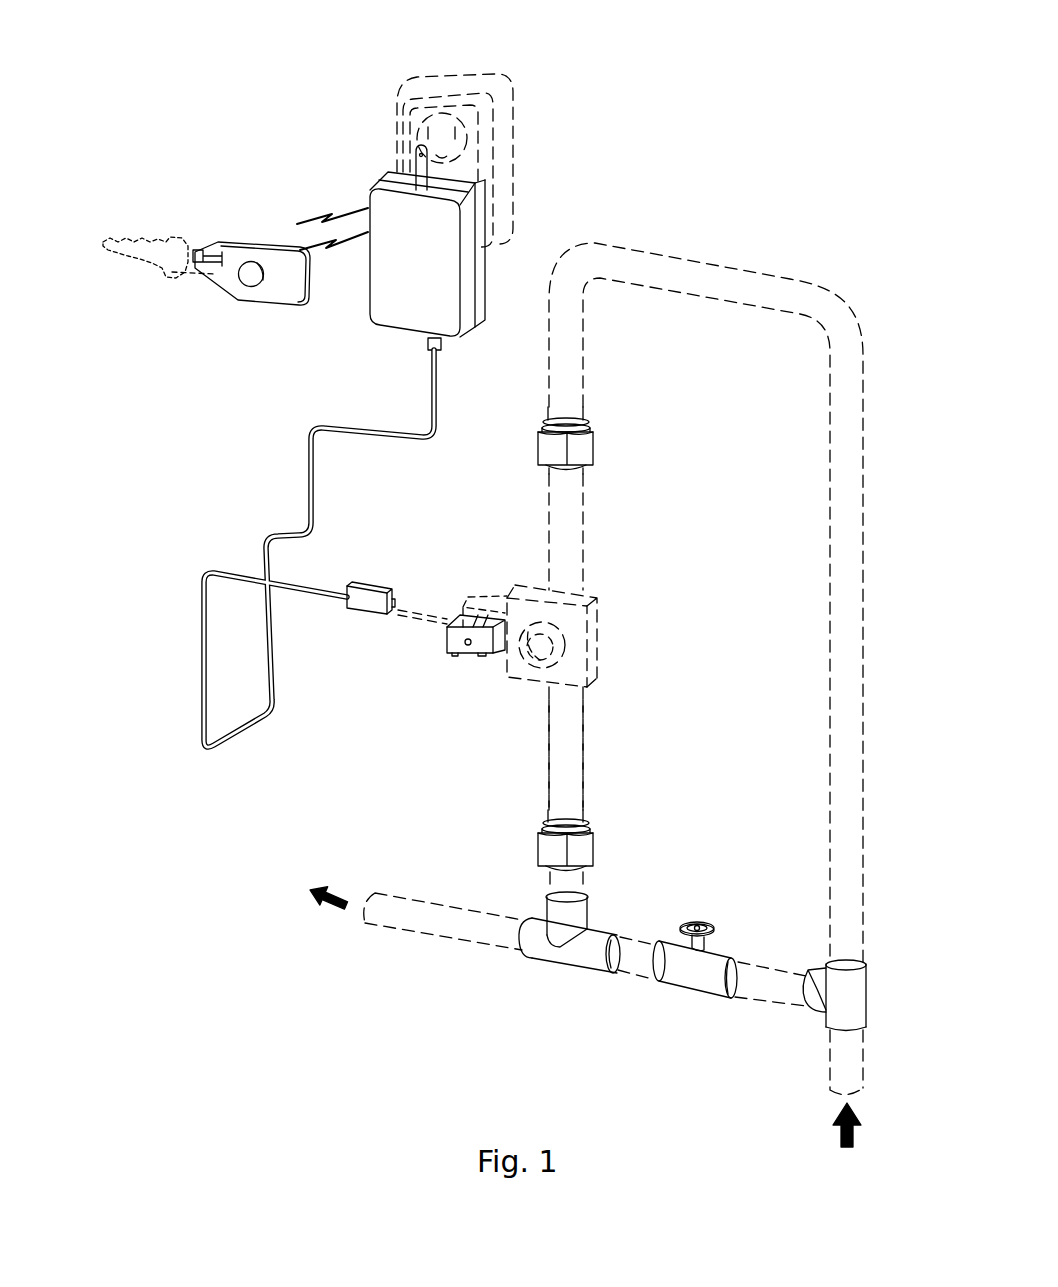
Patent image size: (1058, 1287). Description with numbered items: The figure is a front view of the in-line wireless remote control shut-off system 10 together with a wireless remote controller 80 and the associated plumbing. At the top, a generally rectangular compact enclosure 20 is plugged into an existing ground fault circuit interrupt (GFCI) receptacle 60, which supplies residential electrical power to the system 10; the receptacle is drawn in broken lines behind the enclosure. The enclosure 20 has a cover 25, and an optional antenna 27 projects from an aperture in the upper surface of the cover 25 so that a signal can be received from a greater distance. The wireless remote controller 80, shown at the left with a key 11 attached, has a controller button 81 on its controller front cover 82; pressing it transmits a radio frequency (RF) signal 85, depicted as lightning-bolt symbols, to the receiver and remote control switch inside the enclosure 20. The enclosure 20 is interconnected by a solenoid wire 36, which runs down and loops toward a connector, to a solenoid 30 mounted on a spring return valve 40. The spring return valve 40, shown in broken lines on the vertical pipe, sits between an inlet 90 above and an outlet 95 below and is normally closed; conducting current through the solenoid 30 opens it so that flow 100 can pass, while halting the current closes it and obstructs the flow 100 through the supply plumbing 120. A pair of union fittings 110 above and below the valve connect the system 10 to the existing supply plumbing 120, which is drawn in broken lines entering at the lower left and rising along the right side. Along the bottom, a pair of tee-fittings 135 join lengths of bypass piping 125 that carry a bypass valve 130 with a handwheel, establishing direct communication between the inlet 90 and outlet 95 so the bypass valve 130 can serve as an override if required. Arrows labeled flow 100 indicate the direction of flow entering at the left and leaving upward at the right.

The in-line wireless remote control shut-off system 10 is at (830, 122).
The key 11 is at (202, 250).
The enclosure 20 is at (480, 280).
The cover 25 is at (383, 200).
The optional antenna 27 is at (419, 166).
The solenoid 30 is at (457, 636).
The solenoid wire 36 is at (380, 440).
The spring return valve 40 is at (590, 657).
The ground fault circuit interrupt (GFCI) receptacle 60 is at (462, 85).
The wireless remote controller 80 is at (198, 314).
The controller button 81 is at (253, 272).
The controller front cover 82 is at (273, 293).
The radio frequency (RF) signal 85 is at (302, 249).
The inlet 90 is at (570, 528).
The outlet 95 is at (575, 746).
The flow 100 is at (322, 905).
The union fitting 110 is at (581, 452).
The supply plumbing 120 is at (430, 923).
The bypass piping 125 is at (628, 948).
The bypass valve 130 is at (697, 977).
The tee-fitting 135 is at (542, 952).